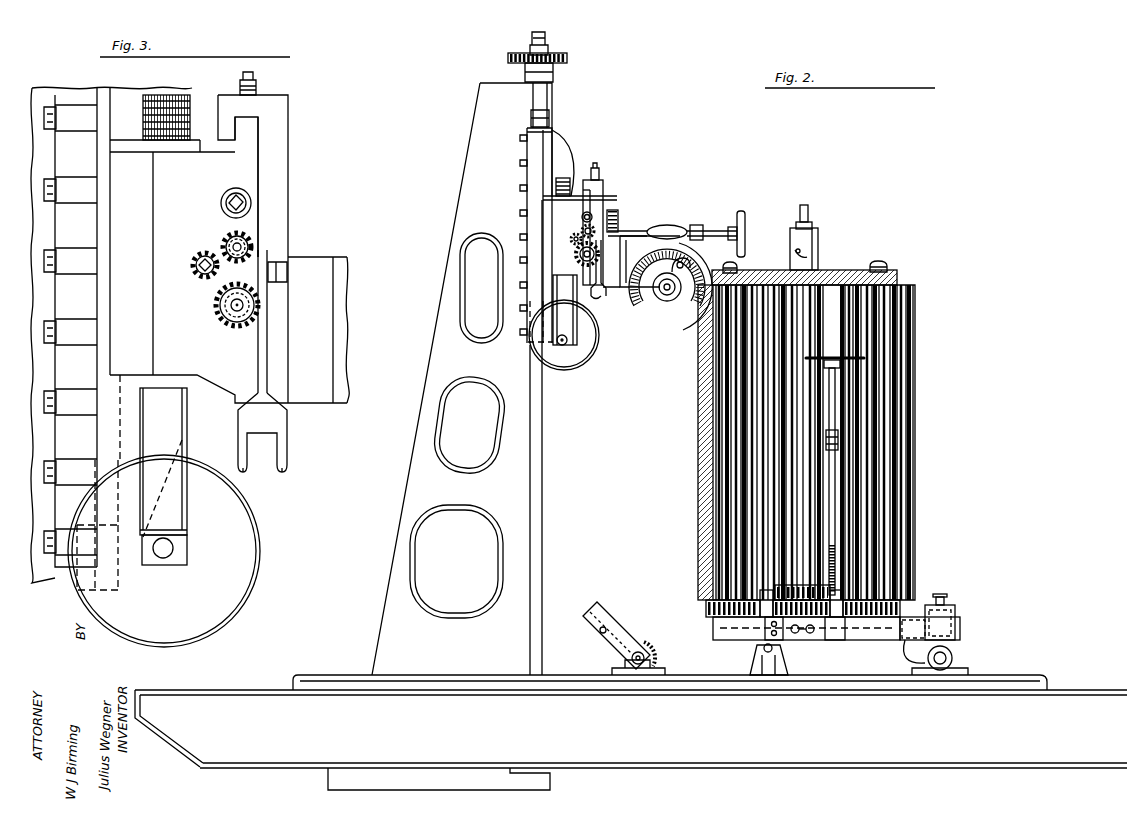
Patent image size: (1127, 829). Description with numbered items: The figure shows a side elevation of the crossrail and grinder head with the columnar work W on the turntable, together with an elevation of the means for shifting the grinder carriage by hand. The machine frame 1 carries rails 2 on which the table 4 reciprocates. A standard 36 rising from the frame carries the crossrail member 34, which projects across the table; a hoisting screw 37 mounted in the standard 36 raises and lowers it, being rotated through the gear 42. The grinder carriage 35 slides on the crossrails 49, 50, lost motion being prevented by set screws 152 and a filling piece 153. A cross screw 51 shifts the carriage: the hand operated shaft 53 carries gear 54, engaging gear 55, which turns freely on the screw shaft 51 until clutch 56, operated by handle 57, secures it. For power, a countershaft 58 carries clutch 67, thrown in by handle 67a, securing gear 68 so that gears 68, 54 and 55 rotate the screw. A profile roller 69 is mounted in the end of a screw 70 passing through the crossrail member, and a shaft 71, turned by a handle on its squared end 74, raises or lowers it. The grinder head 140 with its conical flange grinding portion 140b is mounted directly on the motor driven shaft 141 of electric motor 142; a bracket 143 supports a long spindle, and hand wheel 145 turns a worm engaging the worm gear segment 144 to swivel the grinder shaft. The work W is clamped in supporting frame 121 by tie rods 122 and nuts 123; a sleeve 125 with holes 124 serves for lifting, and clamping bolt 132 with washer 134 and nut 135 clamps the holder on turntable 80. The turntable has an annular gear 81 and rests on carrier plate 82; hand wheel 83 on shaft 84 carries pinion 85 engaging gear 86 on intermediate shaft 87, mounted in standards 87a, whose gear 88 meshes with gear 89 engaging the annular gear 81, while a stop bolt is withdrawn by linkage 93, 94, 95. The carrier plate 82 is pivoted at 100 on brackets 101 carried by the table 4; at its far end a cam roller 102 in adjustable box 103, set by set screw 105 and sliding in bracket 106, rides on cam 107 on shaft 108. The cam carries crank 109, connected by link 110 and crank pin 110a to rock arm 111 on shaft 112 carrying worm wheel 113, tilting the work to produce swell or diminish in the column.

In FIG. 2, the frame 1 is at (727, 787).
In FIG. 2, the rail 2 is at (136, 716).
In FIG. 2, the table 4 is at (1036, 676).
In FIG. 3, the crossrail member 34 is at (195, 330).
In FIG. 2, the crossrail member 34 is at (566, 223).
In FIG. 3, the grinder carriage 35 is at (276, 117).
In FIG. 2, the grinder carriage 35 is at (601, 182).
In FIG. 3, the standard 36 is at (40, 582).
In FIG. 2, the standard 36 is at (410, 463).
In FIG. 2, the hoisting screw 37 is at (545, 35).
In FIG. 2, the gear 42 is at (567, 60).
In FIG. 3, the crossrail 49 is at (250, 135).
In FIG. 2, the crossrail 49 is at (598, 192).
In FIG. 3, the crossrail 50 is at (245, 385).
In FIG. 2, the crossrail 50 is at (605, 296).
In FIG. 3, the cross screw 51 is at (235, 306).
In FIG. 2, the cross screw 51 is at (585, 259).
In FIG. 3, the hand operated shaft 53 is at (195, 269).
In FIG. 2, the hand operated shaft 53 is at (551, 248).
In FIG. 3, the gear 54 is at (200, 258).
In FIG. 2, the gear 54 is at (572, 239).
In FIG. 3, the gear 55 is at (215, 315).
In FIG. 2, the gear 55 is at (580, 250).
In FIG. 3, the clutch 56 is at (250, 318).
In FIG. 2, the clutch 56 is at (602, 262).
In FIG. 3, the handle 57 is at (252, 472).
In FIG. 2, the handle 57 is at (566, 340).
In FIG. 3, the countershaft 58 is at (241, 249).
In FIG. 2, the countershaft 58 is at (616, 225).
In FIG. 3, the clutch 67 is at (222, 240).
In FIG. 2, the clutch 67 is at (584, 227).
In FIG. 3, the handle 67a is at (286, 441).
In FIG. 2, the handle 67a is at (587, 347).
In FIG. 3, the gear 68 is at (250, 235).
In FIG. 2, the gear 68 is at (595, 229).
In FIG. 3, the profile roller 69 is at (238, 580).
In FIG. 2, the profile roller 69 is at (575, 358).
In FIG. 3, the screw 70 is at (152, 100).
In FIG. 2, the screw 70 is at (557, 185).
In FIG. 3, the shaft 71 is at (228, 195).
In FIG. 2, the shaft 71 is at (592, 216).
In FIG. 3, the squared end 74 is at (245, 200).
In FIG. 2, the turntable 80 is at (714, 610).
In FIG. 2, the annular gear 81 is at (713, 623).
In FIG. 2, the carrier plate 82 is at (778, 592).
In FIG. 2, the hand wheel 83 is at (862, 358).
In FIG. 2, the shaft 84 is at (836, 492).
In FIG. 2, the pinion 85 is at (852, 596).
In FIG. 2, the gear 86 is at (726, 590).
In FIG. 2, the intermediate shaft 87 is at (805, 588).
In FIG. 2, the standards 87a is at (790, 641).
In FIG. 2, the gear 88 is at (834, 629).
In FIG. 2, the gear 89 is at (770, 626).
In FIG. 2, the linkage 93 is at (822, 585).
In FIG. 2, the linkage part 94 is at (831, 523).
In FIG. 2, the linkage part 95 is at (840, 435).
In FIG. 2, the pivot 100 is at (766, 652).
In FIG. 2, the brackets 101 is at (774, 666).
In FIG. 2, the cam roller 102 is at (956, 638).
In FIG. 2, the adjustable box 103 is at (956, 612).
In FIG. 2, the set screw 105 is at (942, 600).
In FIG. 2, the bracket 106 is at (957, 625).
In FIG. 2, the cam 107 is at (953, 655).
In FIG. 2, the shaft 108 is at (940, 671).
In FIG. 2, the crank 109 is at (915, 645).
In FIG. 2, the link 110 is at (632, 632).
In FIG. 2, the crank pin 110a is at (606, 633).
In FIG. 2, the rock arm 111 is at (602, 604).
In FIG. 2, the shaft 112 is at (639, 666).
In FIG. 2, the worm wheel 113 is at (620, 662).
In FIG. 2, the supporting frame 121 is at (762, 284).
In FIG. 2, the tie rods 122 is at (886, 265).
In FIG. 2, the nuts 123 is at (886, 272).
In FIG. 2, the holes 124 is at (814, 258).
In FIG. 2, the sleeve 125 is at (822, 248).
In FIG. 2, the clamping bolt 132 is at (808, 211).
In FIG. 2, the washer 134 is at (818, 236).
In FIG. 2, the nut 135 is at (813, 226).
In FIG. 2, the grinder head 140 is at (632, 308).
In FIG. 2, the conical flange grinding portion 140b is at (694, 306).
In FIG. 2, the motor driven shaft 141 is at (675, 291).
In FIG. 2, the electric motor 142 is at (668, 338).
In FIG. 3, the bracket 143 is at (343, 285).
In FIG. 2, the bracket 143 is at (680, 240).
In FIG. 2, the worm gear segment 144 is at (667, 226).
In FIG. 2, the hand wheel 145 is at (745, 211).
In FIG. 3, the set screws 152 is at (256, 82).
In FIG. 2, the set screws 152 is at (597, 169).
In FIG. 3, the filling piece 153 is at (233, 126).
In FIG. 2, the filling piece 153 is at (587, 186).
In FIG. 2, the work W is at (916, 318).